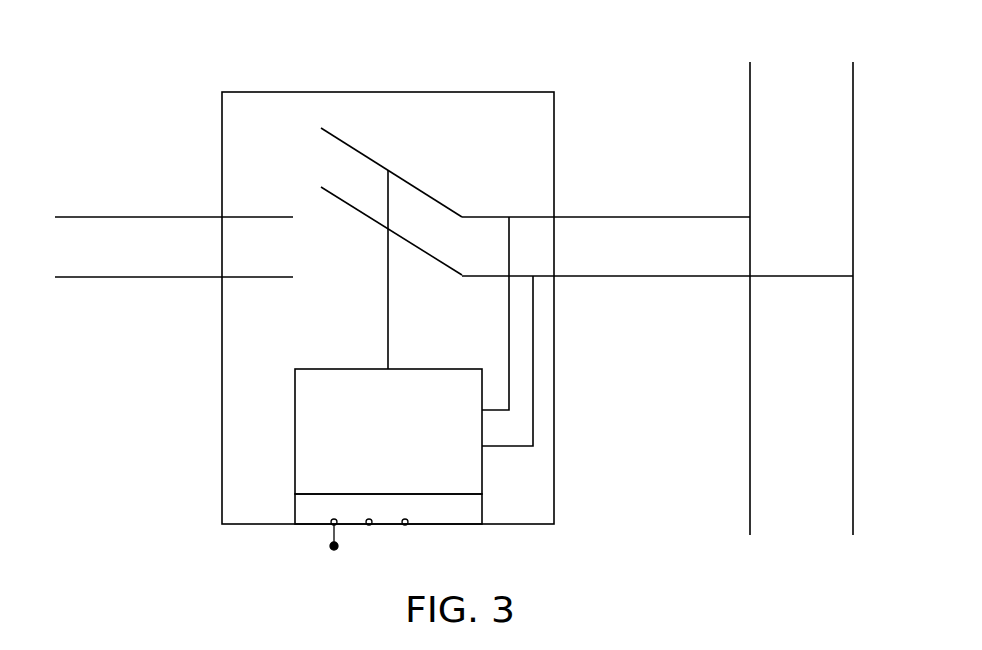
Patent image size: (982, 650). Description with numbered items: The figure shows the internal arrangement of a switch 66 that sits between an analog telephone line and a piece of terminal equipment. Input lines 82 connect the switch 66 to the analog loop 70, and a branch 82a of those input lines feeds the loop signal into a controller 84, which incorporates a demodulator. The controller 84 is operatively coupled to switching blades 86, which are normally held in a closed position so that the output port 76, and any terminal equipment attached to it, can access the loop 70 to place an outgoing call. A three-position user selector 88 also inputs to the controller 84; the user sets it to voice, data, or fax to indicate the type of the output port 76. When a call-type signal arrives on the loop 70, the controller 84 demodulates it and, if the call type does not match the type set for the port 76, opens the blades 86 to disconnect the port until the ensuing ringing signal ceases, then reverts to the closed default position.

The switch 66 is at (448, 33).
The analog loop 70 is at (750, 94).
The output port 76 is at (214, 286).
The input lines 82 is at (565, 288).
The branch of the input lines 82a is at (533, 380).
The controller 84 is at (296, 387).
The switching blades 86 is at (415, 186).
The three-position user selector 88 is at (440, 508).